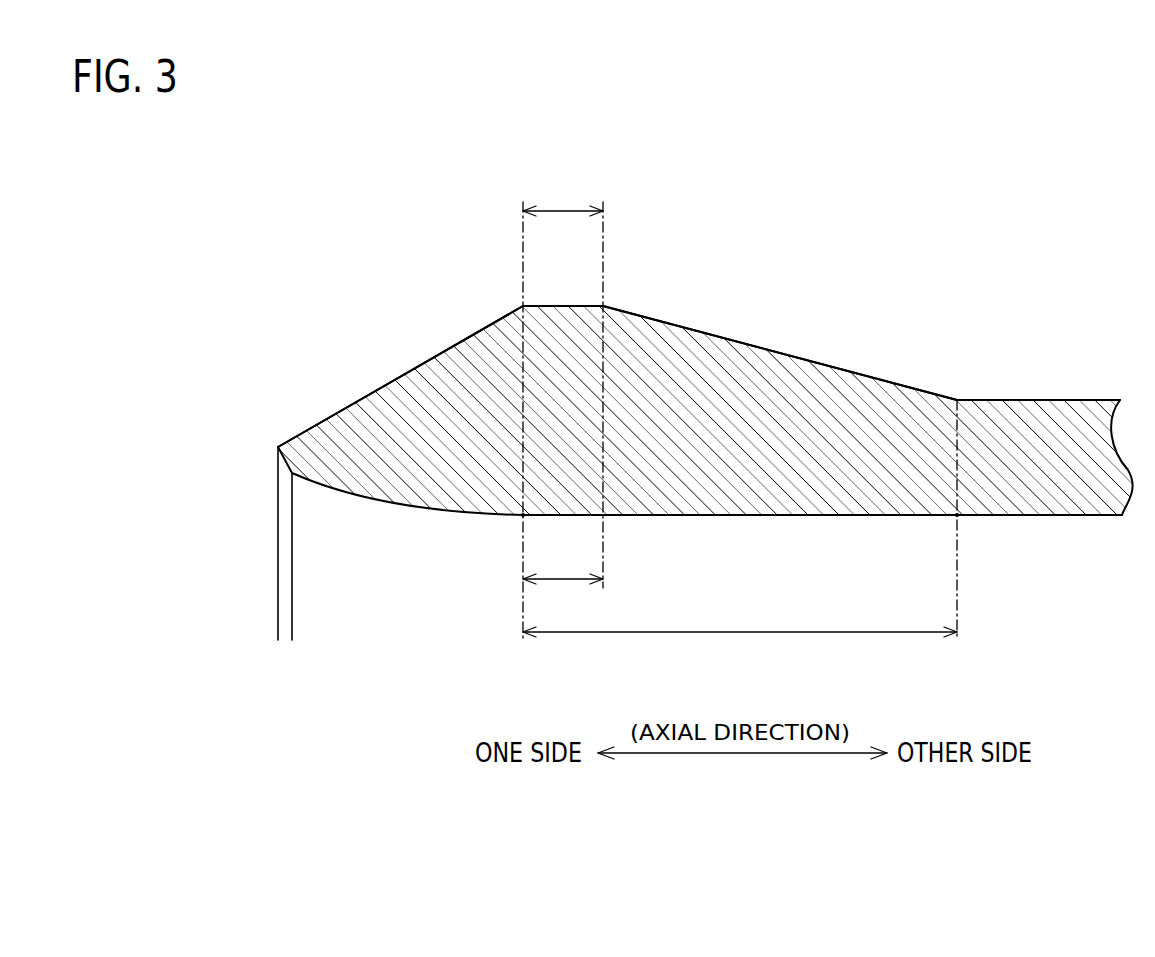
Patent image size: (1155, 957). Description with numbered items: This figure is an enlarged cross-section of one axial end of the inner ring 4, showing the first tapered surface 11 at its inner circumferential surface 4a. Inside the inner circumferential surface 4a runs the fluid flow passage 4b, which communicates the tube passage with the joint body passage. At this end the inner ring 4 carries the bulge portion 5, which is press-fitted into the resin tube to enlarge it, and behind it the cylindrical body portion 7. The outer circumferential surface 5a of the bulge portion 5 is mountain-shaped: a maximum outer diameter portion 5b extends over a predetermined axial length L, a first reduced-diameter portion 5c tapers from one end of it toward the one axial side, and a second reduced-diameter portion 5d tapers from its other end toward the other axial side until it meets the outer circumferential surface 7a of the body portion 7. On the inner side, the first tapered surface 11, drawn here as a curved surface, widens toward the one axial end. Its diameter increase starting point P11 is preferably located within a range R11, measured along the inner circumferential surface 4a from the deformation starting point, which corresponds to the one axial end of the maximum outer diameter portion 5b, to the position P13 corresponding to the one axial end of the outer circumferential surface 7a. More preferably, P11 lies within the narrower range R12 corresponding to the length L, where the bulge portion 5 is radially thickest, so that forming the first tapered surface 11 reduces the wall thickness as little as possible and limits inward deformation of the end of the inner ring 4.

The inner ring 4 is at (329, 287).
The inner circumferential surface 4a is at (826, 518).
The fluid flow passage 4b is at (1040, 671).
The bulge portion 5 is at (732, 356).
The outer circumferential surface 5a is at (447, 350).
The maximum outer diameter portion 5b is at (565, 305).
The first reduced-diameter portion 5c is at (370, 392).
The second reduced-diameter portion 5d is at (823, 362).
The body portion 7 is at (1068, 410).
The outer circumferential surface 7a is at (1016, 399).
The first tapered surface 11 is at (350, 493).
The length of maximum outer diameter portion L is at (563, 196).
The range R11 is at (740, 618).
The range R12 is at (563, 562).
The diameter increase starting point P11 is at (523, 517).
The position P13 is at (957, 517).